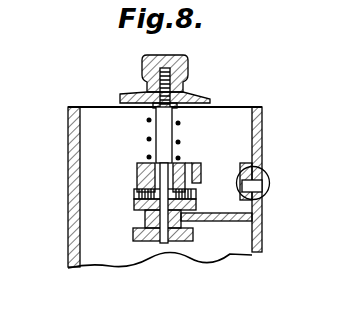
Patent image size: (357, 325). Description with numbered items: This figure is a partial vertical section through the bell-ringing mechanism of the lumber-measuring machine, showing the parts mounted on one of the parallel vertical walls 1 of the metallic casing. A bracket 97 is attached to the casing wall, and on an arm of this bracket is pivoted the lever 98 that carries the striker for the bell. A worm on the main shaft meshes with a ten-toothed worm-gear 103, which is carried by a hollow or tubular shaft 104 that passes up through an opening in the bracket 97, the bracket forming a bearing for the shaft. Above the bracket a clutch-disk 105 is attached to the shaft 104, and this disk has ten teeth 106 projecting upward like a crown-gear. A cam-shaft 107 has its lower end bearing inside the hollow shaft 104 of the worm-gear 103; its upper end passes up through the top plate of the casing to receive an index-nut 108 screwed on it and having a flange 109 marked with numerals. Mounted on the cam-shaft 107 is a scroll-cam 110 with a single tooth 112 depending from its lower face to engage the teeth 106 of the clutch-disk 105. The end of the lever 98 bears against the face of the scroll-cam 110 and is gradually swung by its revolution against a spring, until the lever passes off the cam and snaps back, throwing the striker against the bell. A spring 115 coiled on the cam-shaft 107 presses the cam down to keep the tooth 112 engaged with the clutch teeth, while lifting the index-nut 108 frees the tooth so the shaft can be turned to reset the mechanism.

The parallel vertical walls of a metallic casing 1 is at (68, 184).
The bracket 97 is at (262, 233).
The lever 98 is at (201, 166).
The worm-gear 103 is at (193, 233).
The hollow or tubular shaft 104 is at (175, 241).
The clutch-disk 105 is at (134, 201).
The teeth 106 is at (136, 190).
The cam-shaft 107 is at (166, 148).
The index-nut 108 is at (188, 78).
The flange 109 is at (208, 101).
The scroll-cam 110 is at (137, 165).
The single tooth 112 is at (185, 192).
The spring 115 is at (179, 141).